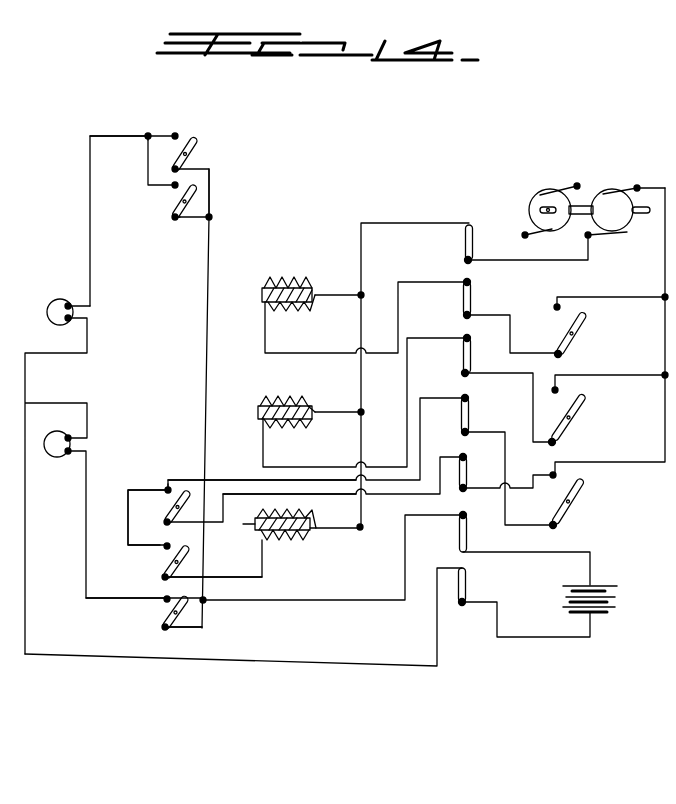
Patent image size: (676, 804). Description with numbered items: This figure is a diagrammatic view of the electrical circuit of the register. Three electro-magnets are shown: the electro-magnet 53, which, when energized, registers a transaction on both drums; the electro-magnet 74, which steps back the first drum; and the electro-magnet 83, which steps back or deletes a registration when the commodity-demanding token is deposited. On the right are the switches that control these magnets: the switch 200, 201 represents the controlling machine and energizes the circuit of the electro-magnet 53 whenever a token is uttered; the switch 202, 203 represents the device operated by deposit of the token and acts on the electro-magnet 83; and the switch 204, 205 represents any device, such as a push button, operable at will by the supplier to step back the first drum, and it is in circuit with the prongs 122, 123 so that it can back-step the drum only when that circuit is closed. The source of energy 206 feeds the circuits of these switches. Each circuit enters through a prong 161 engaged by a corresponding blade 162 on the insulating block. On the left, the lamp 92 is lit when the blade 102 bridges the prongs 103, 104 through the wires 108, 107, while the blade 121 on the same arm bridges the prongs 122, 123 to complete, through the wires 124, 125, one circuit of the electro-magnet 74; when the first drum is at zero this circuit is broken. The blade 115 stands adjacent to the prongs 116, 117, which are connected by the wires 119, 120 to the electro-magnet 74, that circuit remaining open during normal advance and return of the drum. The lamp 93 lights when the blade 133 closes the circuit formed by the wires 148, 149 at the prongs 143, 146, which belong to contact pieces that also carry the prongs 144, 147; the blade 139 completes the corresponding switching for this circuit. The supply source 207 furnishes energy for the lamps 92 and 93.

The wire 148 is at (113, 136).
The prong 144 is at (168, 113).
The prong 147 is at (192, 120).
The switch 139 is at (199, 146).
The wire 149 is at (211, 200).
The blade 133 is at (186, 208).
The prong 143 is at (174, 187).
The prong 146 is at (174, 219).
The lamp 93 is at (58, 303).
The lamp 92 is at (56, 458).
The prong 116 is at (135, 462).
The prong 117 is at (165, 488).
The blade 115 is at (190, 488).
The wire 119 is at (241, 477).
The wire 124 is at (128, 532).
The prong 122 is at (165, 548).
The prong 123 is at (163, 578).
The blade 121 is at (190, 549).
The wire 125 is at (233, 578).
The electro-magnet 74 is at (294, 542).
The electro-magnet 83 is at (292, 286).
The electro-magnet 53 is at (291, 402).
The wire 120 is at (316, 495).
The wire 108 is at (100, 598).
The prong 103 is at (165, 601).
The prong 104 is at (163, 629).
The wire 107 is at (192, 630).
The blade 102 is at (190, 626).
The prong 161 is at (468, 226).
The blade 162 is at (466, 248).
The source of energy 206 is at (615, 186).
The switch contact 203 is at (556, 306).
The switch 202 is at (588, 322).
The switch contact 201 is at (560, 390).
The switch 200 is at (572, 430).
The switch contact 205 is at (560, 473).
The switch 204 is at (578, 498).
The supply source 207 is at (612, 602).